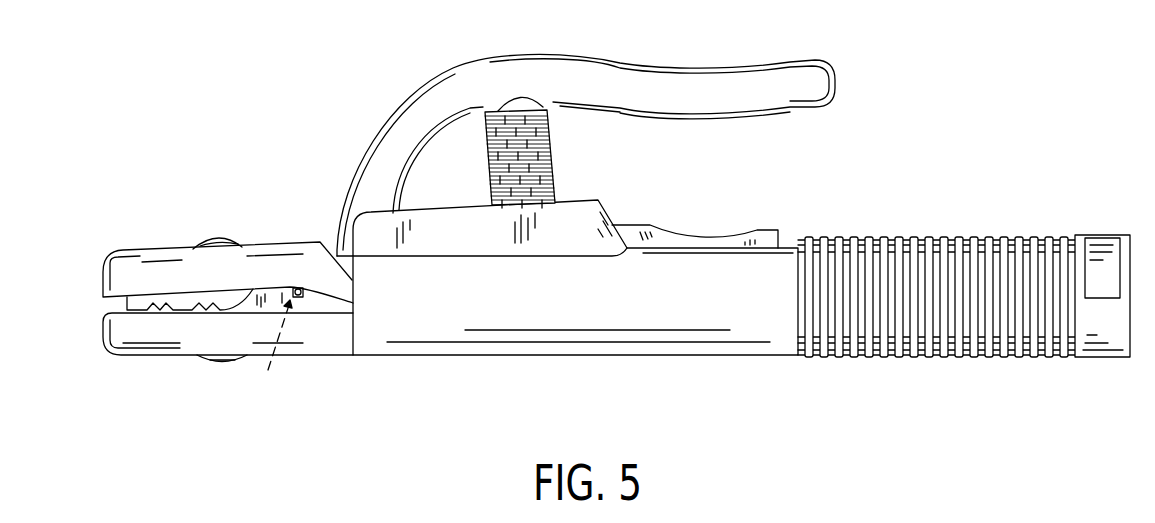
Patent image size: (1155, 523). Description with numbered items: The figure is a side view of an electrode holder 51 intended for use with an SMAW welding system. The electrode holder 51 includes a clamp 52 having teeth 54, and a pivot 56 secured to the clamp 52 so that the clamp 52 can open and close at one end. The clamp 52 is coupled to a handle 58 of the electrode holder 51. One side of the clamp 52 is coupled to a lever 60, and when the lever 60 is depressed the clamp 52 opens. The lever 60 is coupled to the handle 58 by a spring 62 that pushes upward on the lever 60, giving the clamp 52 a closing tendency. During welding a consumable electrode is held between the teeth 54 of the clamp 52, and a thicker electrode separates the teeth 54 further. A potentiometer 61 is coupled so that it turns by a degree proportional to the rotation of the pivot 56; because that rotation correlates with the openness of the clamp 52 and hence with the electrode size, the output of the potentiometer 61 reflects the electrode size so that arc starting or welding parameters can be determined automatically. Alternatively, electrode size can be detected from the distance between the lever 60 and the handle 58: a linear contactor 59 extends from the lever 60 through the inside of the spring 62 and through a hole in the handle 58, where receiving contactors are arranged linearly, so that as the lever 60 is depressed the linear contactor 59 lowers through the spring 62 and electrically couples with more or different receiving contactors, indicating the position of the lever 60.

The electrode holder 51 is at (998, 60).
The clamp 52 is at (172, 248).
The teeth 54 is at (123, 300).
The pivot 56 is at (301, 297).
The handle 58 is at (740, 357).
The linear contactor 59 is at (497, 150).
The lever 60 is at (658, 63).
The potentiometer 61 is at (274, 352).
The spring 62 is at (553, 140).